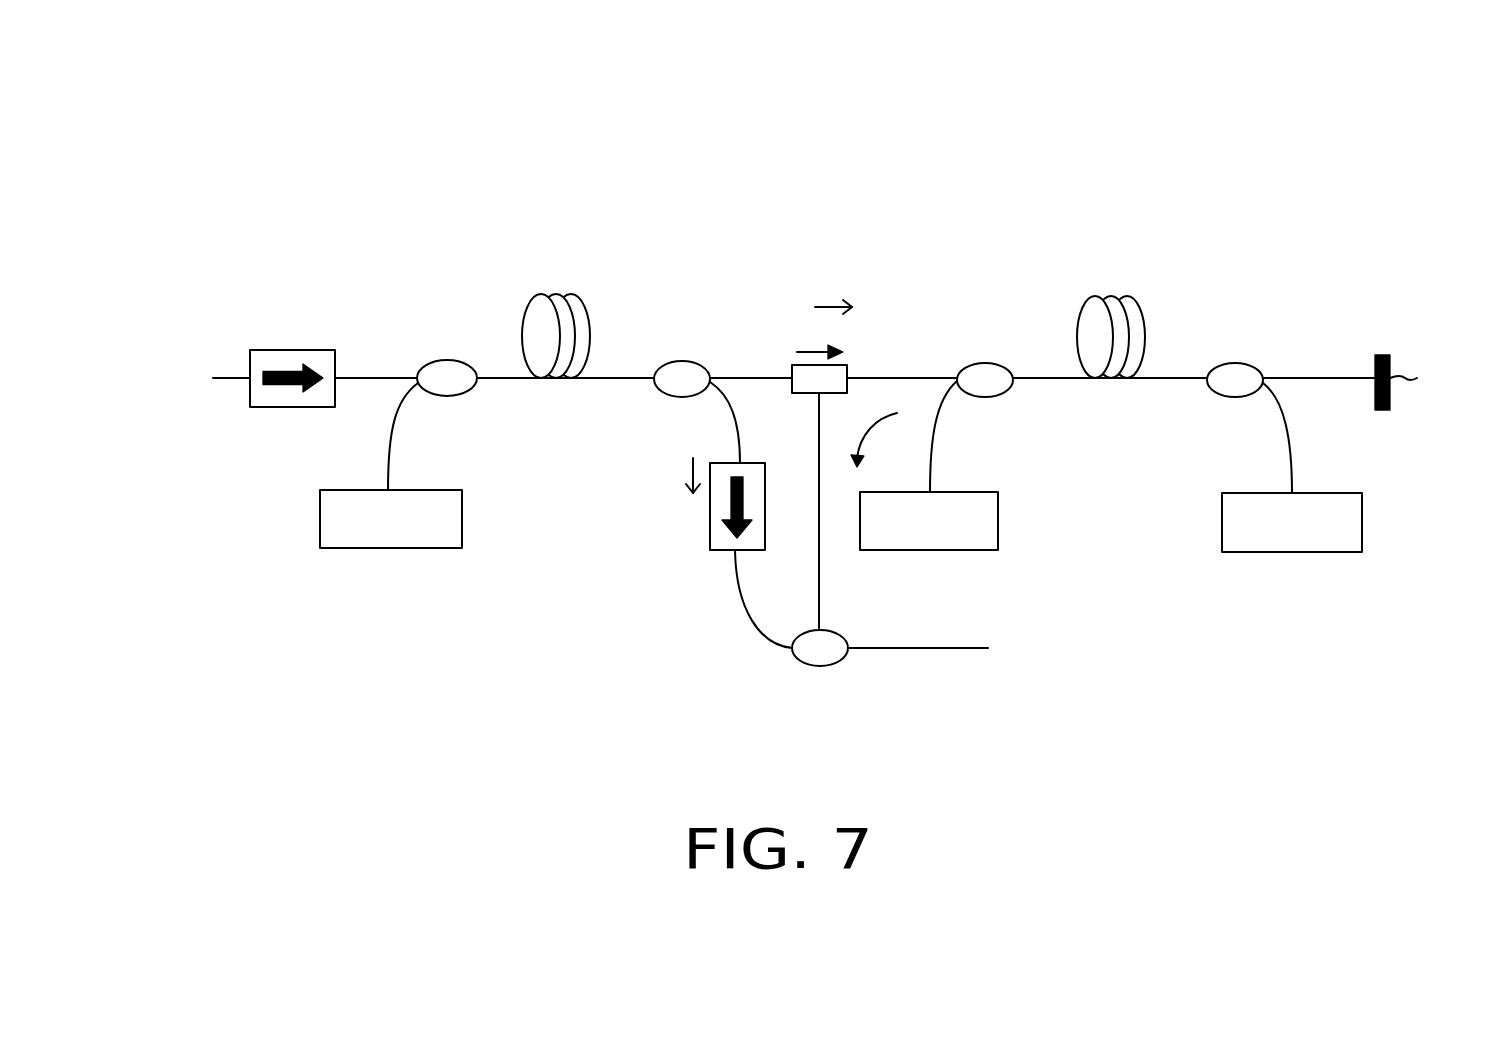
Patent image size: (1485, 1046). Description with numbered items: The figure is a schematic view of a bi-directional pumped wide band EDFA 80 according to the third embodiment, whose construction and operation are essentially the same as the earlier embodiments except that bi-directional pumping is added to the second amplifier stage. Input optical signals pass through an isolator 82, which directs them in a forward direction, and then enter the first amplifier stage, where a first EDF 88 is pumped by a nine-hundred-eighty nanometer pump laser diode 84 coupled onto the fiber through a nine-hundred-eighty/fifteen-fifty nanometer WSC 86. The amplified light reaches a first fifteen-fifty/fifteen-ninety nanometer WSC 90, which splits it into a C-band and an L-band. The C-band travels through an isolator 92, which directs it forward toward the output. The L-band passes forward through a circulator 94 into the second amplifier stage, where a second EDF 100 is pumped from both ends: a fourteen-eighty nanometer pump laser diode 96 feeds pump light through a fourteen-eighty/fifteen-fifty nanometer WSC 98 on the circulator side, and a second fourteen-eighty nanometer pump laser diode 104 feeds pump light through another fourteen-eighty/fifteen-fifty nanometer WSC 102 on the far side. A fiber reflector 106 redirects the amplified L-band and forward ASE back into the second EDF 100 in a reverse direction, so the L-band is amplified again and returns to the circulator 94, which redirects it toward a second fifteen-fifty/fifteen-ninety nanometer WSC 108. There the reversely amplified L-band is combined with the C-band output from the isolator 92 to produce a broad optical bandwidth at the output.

The bi-directional pumped wide band EDFA 80 is at (1222, 201).
The isolator 82 is at (293, 407).
The 980 nm pump laser diode 84 is at (462, 517).
The 980/1550 nm WSC 86 is at (468, 392).
The first EDF 88 is at (583, 378).
The first 1550/1590 nm WSC 90 is at (683, 397).
The isolator 92 is at (722, 550).
The circulator 94 is at (806, 393).
The 1480 nm pump laser diode 96 is at (998, 521).
The 1480/1550 nm WSC 98 is at (987, 397).
The second EDF 100 is at (1138, 378).
The 1480/1550 nm WSC 102 is at (1237, 397).
The 1480 nm pump laser diode 104 is at (1362, 522).
The fiber reflector 106 is at (1396, 356).
The second 1550/1590 nm WSC 108 is at (820, 667).